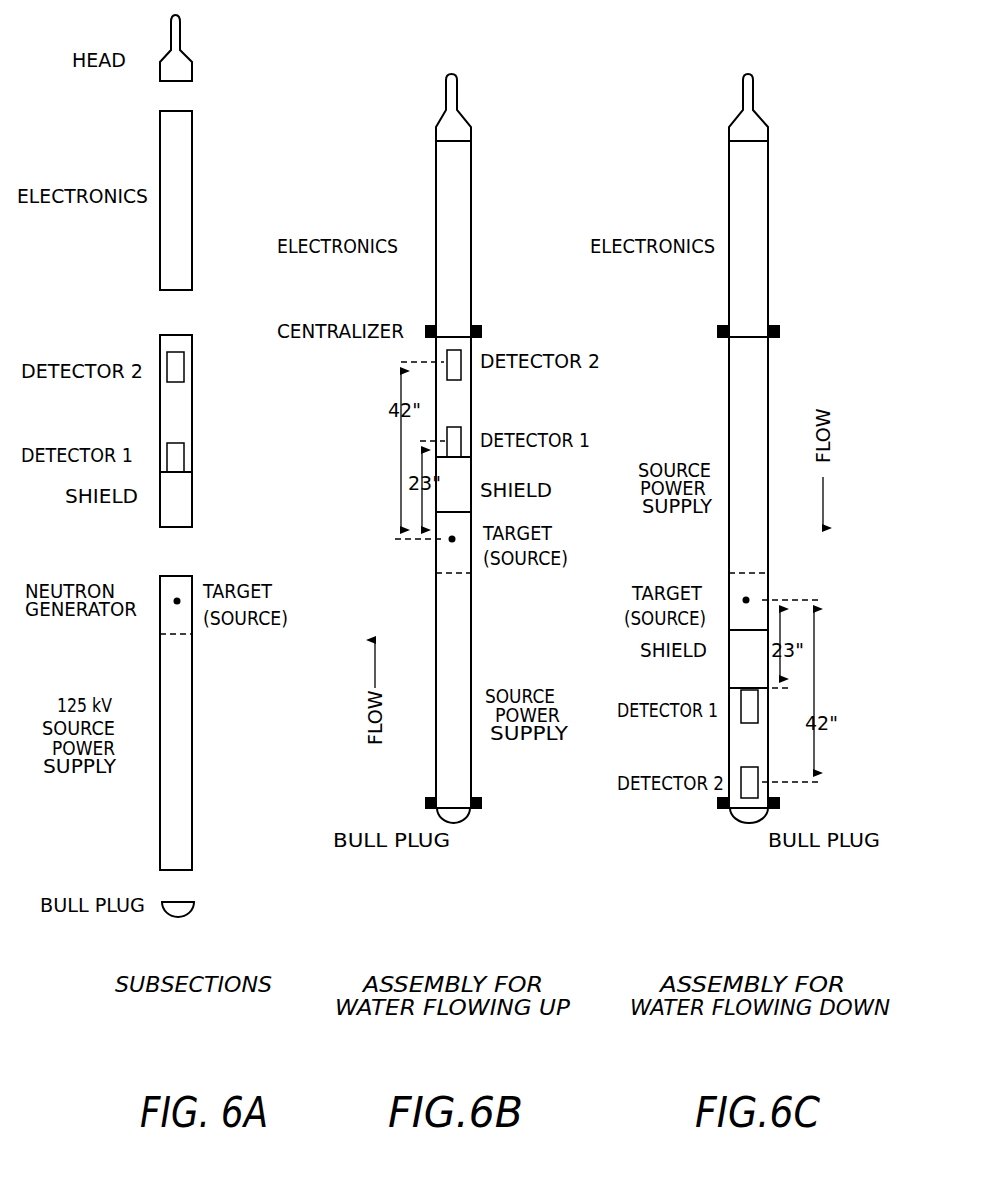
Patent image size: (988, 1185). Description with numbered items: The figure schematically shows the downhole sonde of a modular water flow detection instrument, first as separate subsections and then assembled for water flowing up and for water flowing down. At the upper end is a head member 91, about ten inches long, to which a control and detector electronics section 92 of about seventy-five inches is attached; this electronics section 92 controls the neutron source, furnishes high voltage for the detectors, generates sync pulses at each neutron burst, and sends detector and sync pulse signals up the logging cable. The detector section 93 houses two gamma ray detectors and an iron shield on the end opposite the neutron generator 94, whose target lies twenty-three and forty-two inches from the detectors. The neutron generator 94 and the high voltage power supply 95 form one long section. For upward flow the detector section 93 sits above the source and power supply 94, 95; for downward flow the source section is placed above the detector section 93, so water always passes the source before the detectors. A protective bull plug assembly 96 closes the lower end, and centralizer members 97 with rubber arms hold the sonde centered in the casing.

In FIG. 6A, the head member 91 is at (191, 58).
In FIG. 6B, the head member 91 is at (437, 125).
In FIG. 6C, the head member 91 is at (735, 118).
In FIG. 6A, the control and detector electronics section 92 is at (160, 147).
In FIG. 6B, the control and detector electronics section 92 is at (471, 223).
In FIG. 6C, the control and detector electronics section 92 is at (768, 246).
In FIG. 6A, the detector section 93 is at (192, 407).
In FIG. 6B, the detector section 93 is at (471, 410).
In FIG. 6C, the detector section 93 is at (729, 742).
In FIG. 6A, the neutron generator 94 is at (192, 585).
In FIG. 6B, the neutron generator 94 is at (436, 558).
In FIG. 6C, the neutron generator 94 is at (768, 588).
In FIG. 6A, the high voltage power supply 95 is at (192, 742).
In FIG. 6B, the high voltage power supply 95 is at (471, 676).
In FIG. 6C, the high voltage power supply 95 is at (768, 425).
In FIG. 6A, the bull plug assembly 96 is at (195, 906).
In FIG. 6B, the bull plug assembly 96 is at (468, 820).
In FIG. 6C, the bull plug assembly 96 is at (750, 826).
In FIG. 6B, the centralizer member 97 is at (479, 323).
In FIG. 6C, the centralizer member 97 is at (776, 322).